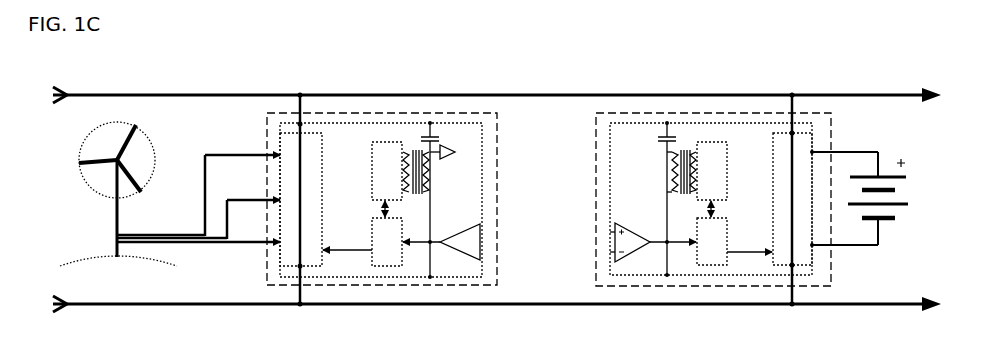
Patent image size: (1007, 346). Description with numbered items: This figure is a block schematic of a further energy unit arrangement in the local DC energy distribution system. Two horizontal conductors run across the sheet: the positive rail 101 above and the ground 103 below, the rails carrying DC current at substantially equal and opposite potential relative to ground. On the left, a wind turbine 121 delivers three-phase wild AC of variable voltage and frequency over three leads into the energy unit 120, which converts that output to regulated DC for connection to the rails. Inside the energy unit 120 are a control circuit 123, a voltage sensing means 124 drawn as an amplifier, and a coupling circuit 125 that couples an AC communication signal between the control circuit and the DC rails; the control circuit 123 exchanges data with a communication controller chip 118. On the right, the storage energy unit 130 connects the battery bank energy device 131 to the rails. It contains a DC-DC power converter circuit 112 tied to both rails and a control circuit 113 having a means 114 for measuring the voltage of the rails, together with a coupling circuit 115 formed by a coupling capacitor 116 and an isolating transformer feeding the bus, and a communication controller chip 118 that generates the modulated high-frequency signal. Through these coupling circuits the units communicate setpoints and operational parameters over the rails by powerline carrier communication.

The positive rail 101 is at (497, 90).
The ground 103 is at (497, 310).
The DC-DC power converter circuit 112 is at (792, 199).
The control circuit 113 is at (734, 241).
The means for measuring the voltage of rails 114 is at (653, 242).
The coupling circuit 115 is at (670, 172).
The coupling capacitor 116 is at (656, 141).
The communication controller chip 118 is at (549, 179).
The energy unit 120 is at (485, 200).
The wind turbine 121 is at (170, 194).
The control circuit 123 is at (341, 199).
The voltage sensing means 124 is at (466, 241).
The coupling circuit 125 is at (432, 172).
The storage energy unit 130 is at (701, 200).
The battery bank energy device 131 is at (859, 198).